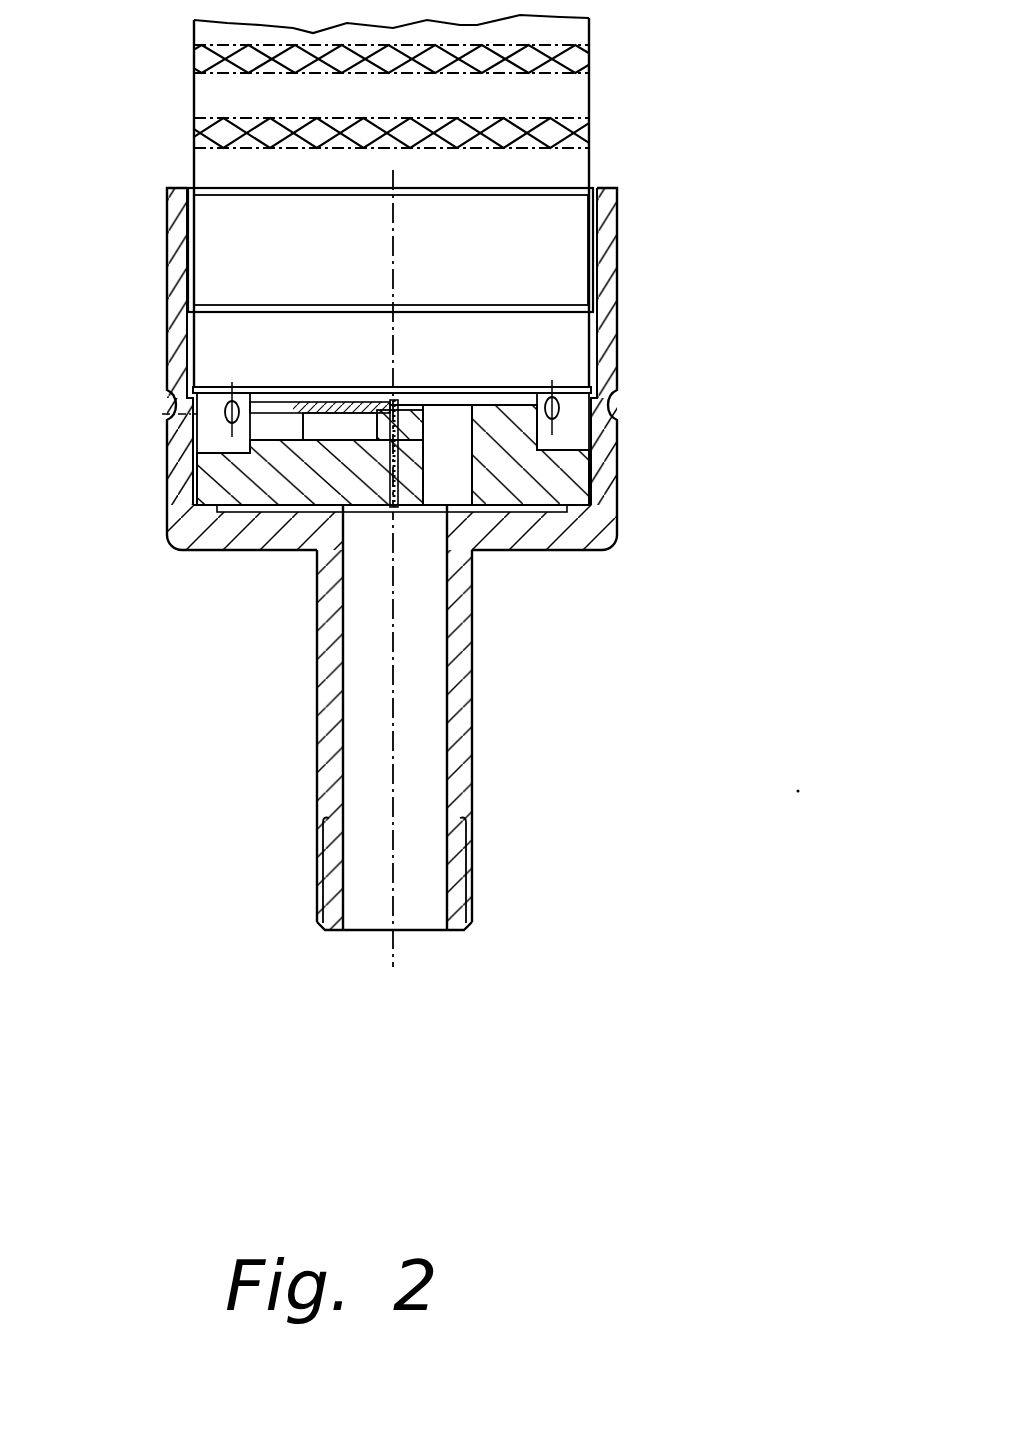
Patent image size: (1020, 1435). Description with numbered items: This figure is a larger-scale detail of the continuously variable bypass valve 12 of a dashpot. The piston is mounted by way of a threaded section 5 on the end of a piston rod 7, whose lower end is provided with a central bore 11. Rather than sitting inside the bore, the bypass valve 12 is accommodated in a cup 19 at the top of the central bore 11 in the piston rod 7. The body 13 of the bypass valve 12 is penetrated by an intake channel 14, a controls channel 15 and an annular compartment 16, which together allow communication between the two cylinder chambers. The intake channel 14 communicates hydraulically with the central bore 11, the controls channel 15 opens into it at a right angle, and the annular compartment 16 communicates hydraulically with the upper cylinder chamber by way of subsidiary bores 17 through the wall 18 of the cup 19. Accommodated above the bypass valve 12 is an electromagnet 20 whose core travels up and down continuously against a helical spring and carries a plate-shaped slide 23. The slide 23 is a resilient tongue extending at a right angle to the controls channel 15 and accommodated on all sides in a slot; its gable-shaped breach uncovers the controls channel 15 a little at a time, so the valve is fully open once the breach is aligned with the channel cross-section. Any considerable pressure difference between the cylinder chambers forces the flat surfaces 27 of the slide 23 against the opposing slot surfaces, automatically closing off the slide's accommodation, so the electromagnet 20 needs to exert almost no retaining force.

The threaded section 5 is at (472, 884).
The piston rod 7 is at (460, 689).
The central bore 11 is at (378, 860).
The bypass valve 12 is at (677, 357).
The body 13 is at (565, 480).
The intake channel 14 is at (445, 477).
The controls channel 15 is at (320, 427).
The annular compartment 16 is at (572, 437).
The subsidiary bores 17 is at (613, 407).
The wall 18 is at (612, 318).
The cup 19 is at (598, 533).
The electromagnet 20 is at (628, 96).
The slide 23 is at (392, 505).
The flat surfaces 27 is at (385, 400).